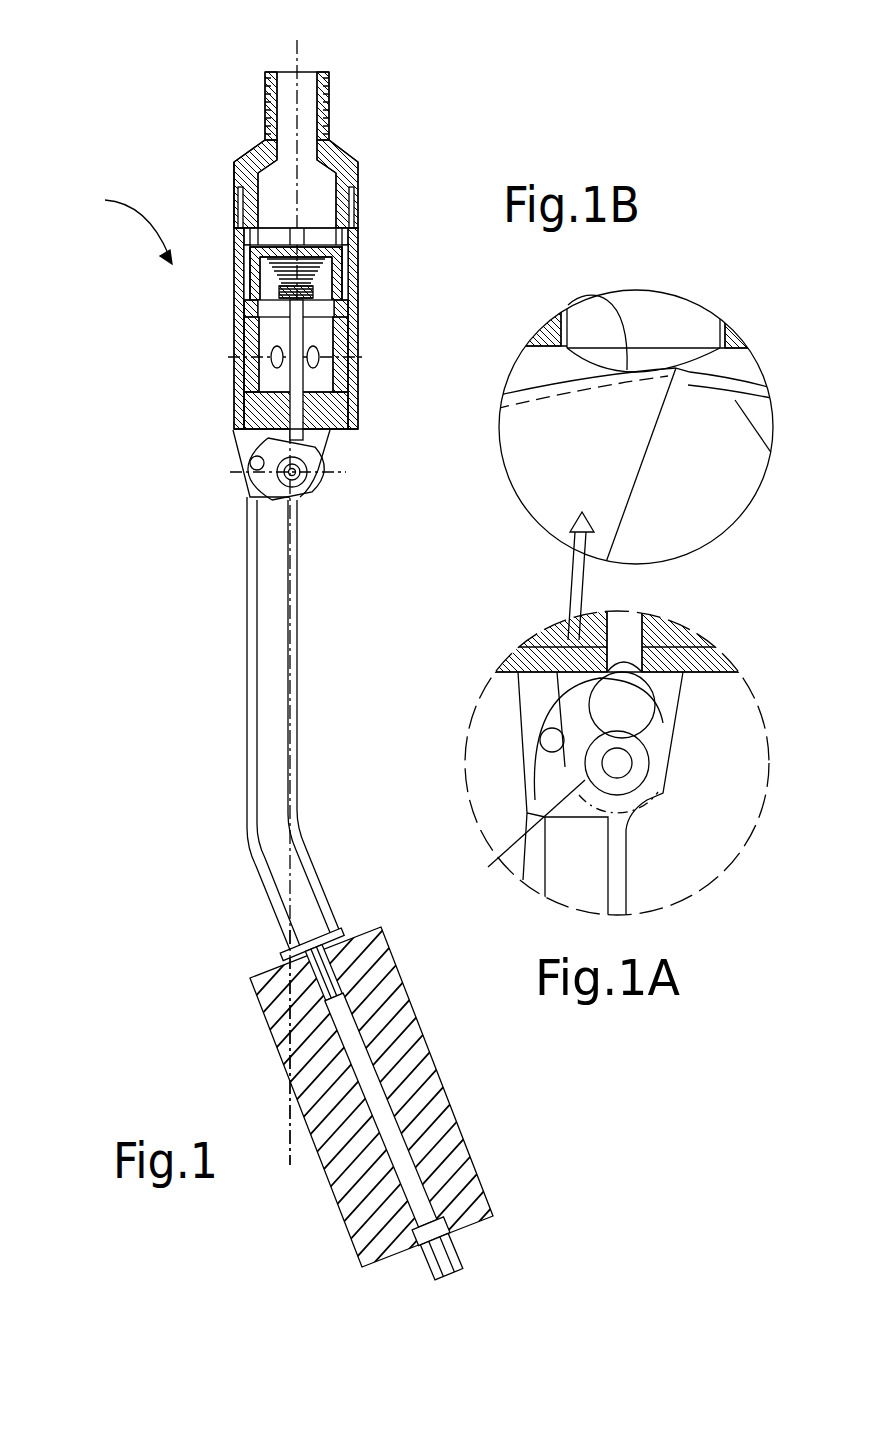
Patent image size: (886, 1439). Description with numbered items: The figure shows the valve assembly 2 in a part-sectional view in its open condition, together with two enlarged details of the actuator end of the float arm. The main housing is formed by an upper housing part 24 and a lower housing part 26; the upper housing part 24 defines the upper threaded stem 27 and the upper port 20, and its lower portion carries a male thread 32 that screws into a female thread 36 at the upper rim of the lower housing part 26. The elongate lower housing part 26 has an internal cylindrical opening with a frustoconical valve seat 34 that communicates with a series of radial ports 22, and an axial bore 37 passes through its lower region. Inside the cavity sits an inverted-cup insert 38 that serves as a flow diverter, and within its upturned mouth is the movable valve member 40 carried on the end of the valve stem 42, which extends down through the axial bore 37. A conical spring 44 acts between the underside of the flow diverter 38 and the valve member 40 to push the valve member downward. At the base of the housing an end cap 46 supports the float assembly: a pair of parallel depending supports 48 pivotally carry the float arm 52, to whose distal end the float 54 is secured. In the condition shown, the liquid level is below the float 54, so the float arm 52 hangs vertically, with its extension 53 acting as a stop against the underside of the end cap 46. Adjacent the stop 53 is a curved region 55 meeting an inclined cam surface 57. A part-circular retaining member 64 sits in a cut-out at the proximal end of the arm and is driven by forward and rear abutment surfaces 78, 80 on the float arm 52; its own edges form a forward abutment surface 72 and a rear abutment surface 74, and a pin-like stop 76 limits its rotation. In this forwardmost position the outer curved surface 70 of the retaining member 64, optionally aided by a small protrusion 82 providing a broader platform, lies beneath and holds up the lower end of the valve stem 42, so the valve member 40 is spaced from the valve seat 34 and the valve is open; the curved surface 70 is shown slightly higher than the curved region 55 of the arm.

In FIG. 1, the valve assembly 2 is at (106, 223).
In FIG. 1, the upper port 20 is at (313, 80).
In FIG. 1, the upper threaded stem 27 is at (327, 112).
In FIG. 1, the upper housing part 24 is at (356, 166).
In FIG. 1, the male thread 32 is at (237, 218).
In FIG. 1, the female thread 36 is at (352, 213).
In FIG. 1, the insert (flow diverter) 38 is at (348, 244).
In FIG. 1, the lower housing part 26 is at (358, 283).
In FIG. 1, the radial ports 22 is at (233, 367).
In FIG. 1, the conical spring 44 is at (282, 273).
In FIG. 1, the valve member 40 is at (283, 315).
In FIG. 1, the axial bore 37 is at (342, 393).
In FIG. 1, the valve stem 42 is at (277, 392).
In FIG. 1B, the valve stem 42 is at (677, 317).
In FIG. 1, the valve seat 34 is at (323, 327).
In FIG. 1, the end cap 46 is at (340, 430).
In FIG. 1, the extension (stop) 53 is at (257, 428).
In FIG. 1A, the extension (stop) 53 is at (537, 672).
In FIG. 1, the depending supports 48 is at (322, 452).
In FIG. 1, the float arm 52 is at (257, 680).
In FIG. 1, the float 54 is at (397, 970).
In FIG. 1B, the outer curved surface 70 is at (613, 297).
In FIG. 1B, the protrusion 82 is at (748, 348).
In FIG. 1B, the curved region 55 is at (768, 390).
In FIG. 1B, the inclined surface (cam surface) 57 is at (753, 433).
In FIG. 1A, the inclined surface (cam surface) 57 is at (693, 650).
In FIG. 1B, the retaining member 64 is at (563, 448).
In FIG. 1A, the retaining member 64 is at (552, 772).
In FIG. 1A, the forward abutment surface 72 is at (640, 683).
In FIG. 1A, the pin-like stop 76 is at (547, 732).
In FIG. 1A, the rear abutment surface (on float arm) 80 is at (647, 730).
In FIG. 1A, the forward abutment surface (on float arm) 78 is at (535, 800).
In FIG. 1A, the rear abutment surface 74 is at (523, 847).